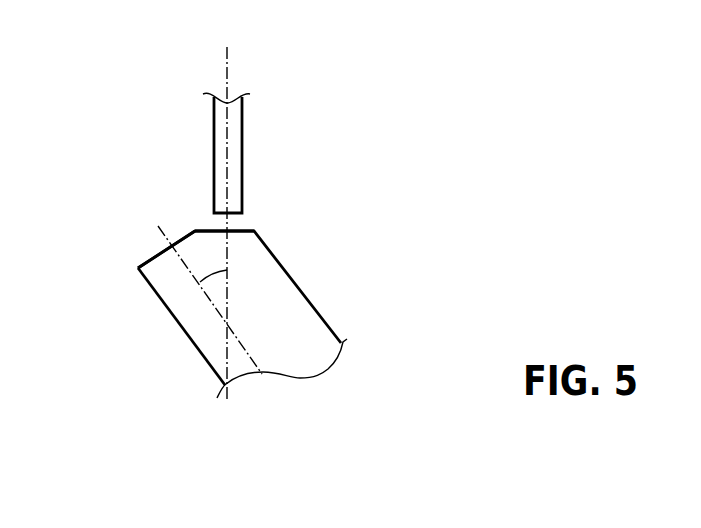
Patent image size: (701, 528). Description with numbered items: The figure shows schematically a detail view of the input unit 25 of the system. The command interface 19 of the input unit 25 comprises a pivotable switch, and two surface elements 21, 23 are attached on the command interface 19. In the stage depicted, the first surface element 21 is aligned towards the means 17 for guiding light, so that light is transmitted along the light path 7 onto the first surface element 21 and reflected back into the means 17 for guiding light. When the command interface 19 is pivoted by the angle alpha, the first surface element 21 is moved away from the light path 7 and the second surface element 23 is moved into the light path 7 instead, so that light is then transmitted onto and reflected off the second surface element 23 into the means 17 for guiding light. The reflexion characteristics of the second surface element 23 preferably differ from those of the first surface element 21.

The light path 7 is at (228, 52).
The means for guiding light 17 is at (212, 141).
The command interface 19 is at (283, 343).
The first surface element 21 is at (244, 231).
The second surface element 23 is at (158, 256).
The input unit 25 is at (350, 111).